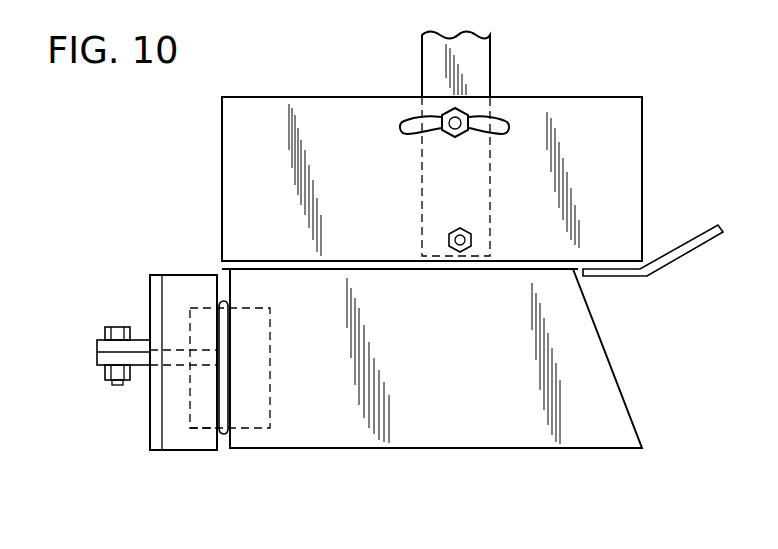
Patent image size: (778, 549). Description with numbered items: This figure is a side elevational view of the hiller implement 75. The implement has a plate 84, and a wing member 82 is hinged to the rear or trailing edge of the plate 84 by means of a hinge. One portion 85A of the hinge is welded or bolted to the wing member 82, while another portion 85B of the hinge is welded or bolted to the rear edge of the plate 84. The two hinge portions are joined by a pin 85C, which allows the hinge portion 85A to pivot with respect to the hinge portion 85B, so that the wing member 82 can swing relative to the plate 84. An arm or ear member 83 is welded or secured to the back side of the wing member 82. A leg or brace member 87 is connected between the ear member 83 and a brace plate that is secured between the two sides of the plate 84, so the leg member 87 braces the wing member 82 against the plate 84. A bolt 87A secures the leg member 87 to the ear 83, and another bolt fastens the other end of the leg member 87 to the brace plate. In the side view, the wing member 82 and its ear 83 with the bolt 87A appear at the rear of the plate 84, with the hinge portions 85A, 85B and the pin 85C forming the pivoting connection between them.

The hiller implement 75 is at (328, 82).
The wing member 82 is at (173, 445).
The arm or ear member 83 is at (97, 348).
The plate 84 is at (558, 435).
The hinge portion 85A is at (204, 430).
The hinge portion 85B is at (270, 422).
The pin 85C is at (222, 302).
The leg or brace member 87 is at (97, 362).
The bolt 87A is at (118, 326).